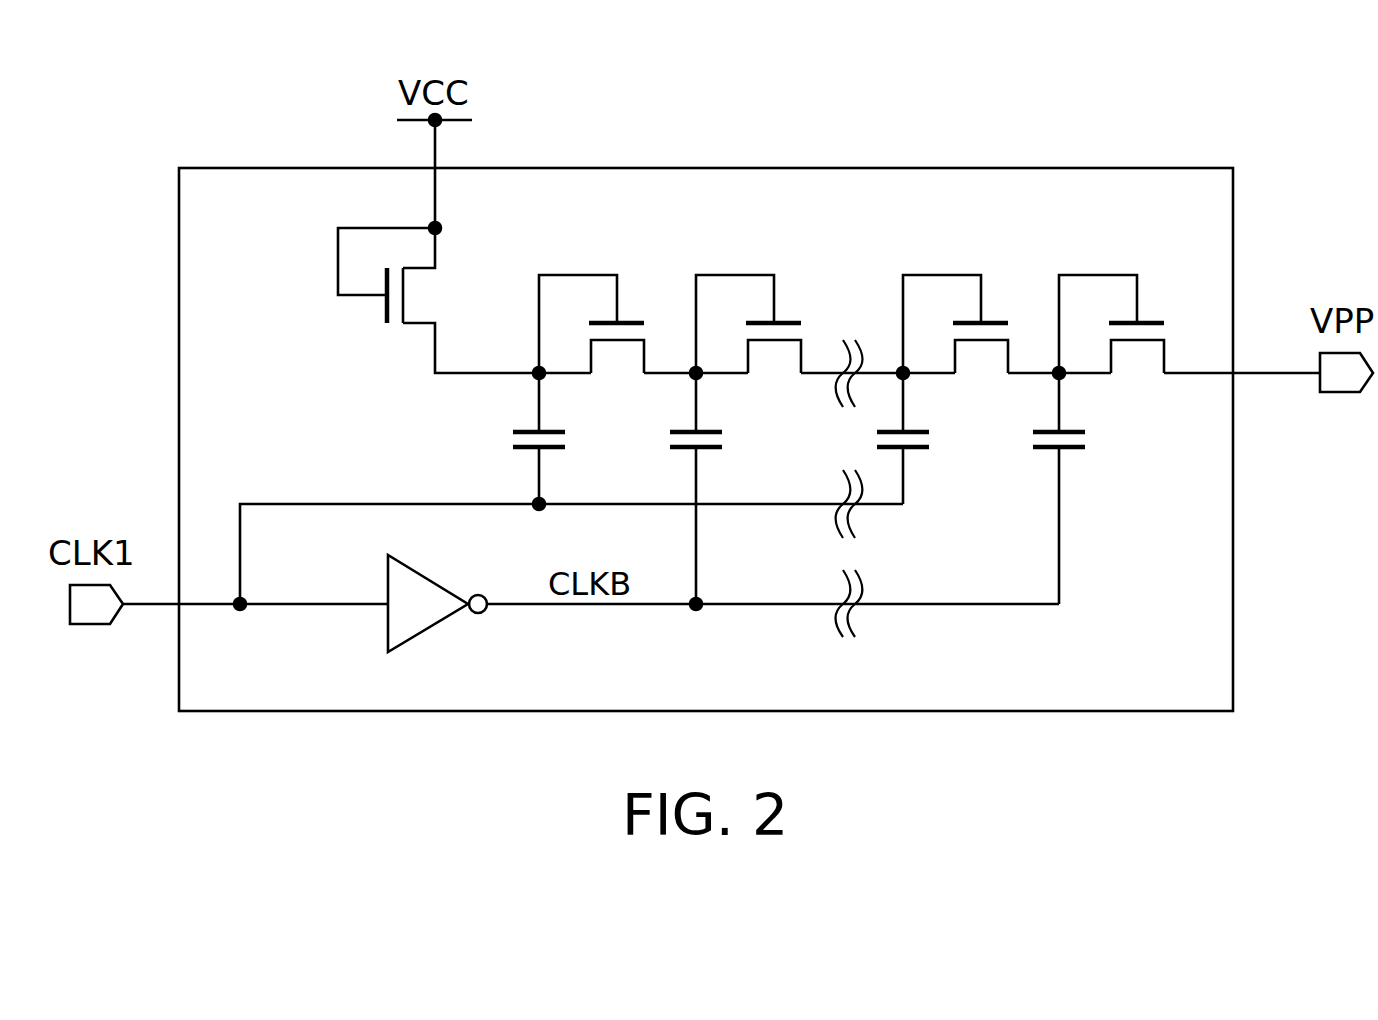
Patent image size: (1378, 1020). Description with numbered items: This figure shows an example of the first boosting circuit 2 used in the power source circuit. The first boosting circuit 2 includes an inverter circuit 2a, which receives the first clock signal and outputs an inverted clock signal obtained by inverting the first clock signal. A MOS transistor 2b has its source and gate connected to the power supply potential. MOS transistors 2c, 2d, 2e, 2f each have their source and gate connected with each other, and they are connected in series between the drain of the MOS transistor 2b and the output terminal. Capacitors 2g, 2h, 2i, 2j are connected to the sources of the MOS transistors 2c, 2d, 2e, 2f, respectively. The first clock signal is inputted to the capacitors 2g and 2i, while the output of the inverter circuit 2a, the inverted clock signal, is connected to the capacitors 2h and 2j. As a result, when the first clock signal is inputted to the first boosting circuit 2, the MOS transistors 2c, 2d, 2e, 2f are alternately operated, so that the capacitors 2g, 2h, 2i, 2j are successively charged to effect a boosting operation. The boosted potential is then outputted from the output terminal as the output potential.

The first boosting circuit 2 is at (928, 168).
The inverter circuit 2a is at (387, 582).
The MOS transistor 2b is at (408, 323).
The MOS transistor 2c is at (637, 322).
The MOS transistor 2d is at (790, 322).
The MOS transistor 2e is at (998, 322).
The MOS transistor 2f is at (1153, 322).
The capacitor 2g is at (526, 432).
The capacitor 2h is at (686, 432).
The capacitor 2i is at (887, 430).
The capacitor 2j is at (1050, 432).